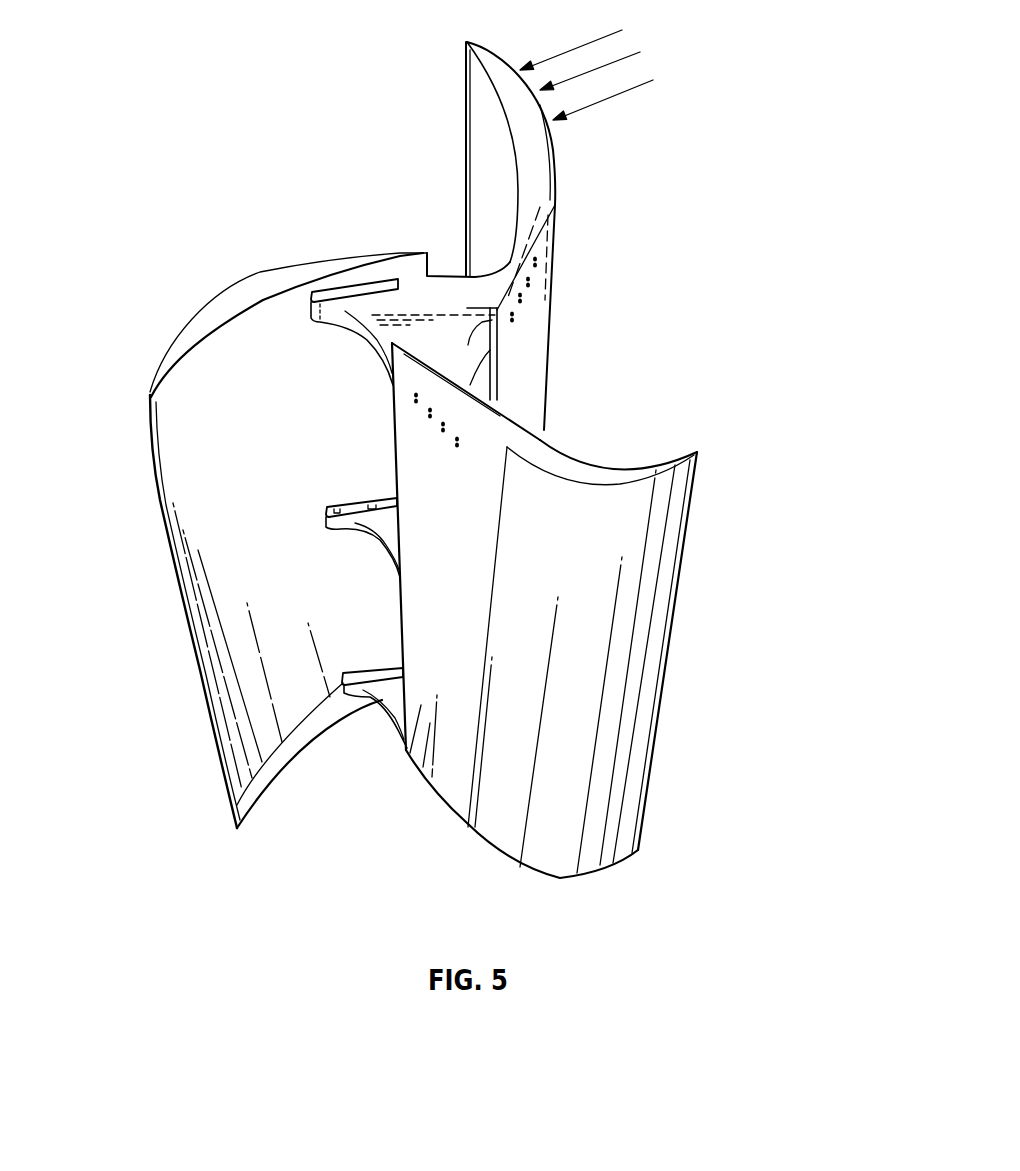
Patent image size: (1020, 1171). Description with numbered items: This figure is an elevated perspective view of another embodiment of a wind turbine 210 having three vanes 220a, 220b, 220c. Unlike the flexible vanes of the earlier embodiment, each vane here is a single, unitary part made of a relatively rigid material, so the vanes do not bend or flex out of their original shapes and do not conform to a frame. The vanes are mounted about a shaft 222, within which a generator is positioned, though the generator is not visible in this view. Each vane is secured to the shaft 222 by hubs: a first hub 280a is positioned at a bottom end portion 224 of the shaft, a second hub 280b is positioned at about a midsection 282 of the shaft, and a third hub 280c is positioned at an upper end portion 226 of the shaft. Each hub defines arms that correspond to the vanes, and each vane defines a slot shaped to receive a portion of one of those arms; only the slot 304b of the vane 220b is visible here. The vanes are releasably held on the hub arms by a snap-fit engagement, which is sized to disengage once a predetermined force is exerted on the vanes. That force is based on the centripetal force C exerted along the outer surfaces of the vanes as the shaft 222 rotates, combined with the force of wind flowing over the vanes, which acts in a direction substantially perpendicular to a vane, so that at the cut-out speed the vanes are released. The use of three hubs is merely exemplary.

The wind turbine 210 is at (668, 172).
The vane 220a is at (627, 833).
The vane 220b is at (240, 702).
The vane 220c is at (480, 188).
The shaft 222 is at (473, 395).
The bottom end portion 224 is at (385, 742).
The upper end portion 226 is at (565, 275).
The first hub 280a is at (380, 697).
The second hub 280b is at (366, 528).
The third hub 280c is at (470, 335).
The midsection 282 is at (416, 543).
The slot 304b is at (349, 273).
The centripetal force C is at (588, 44).